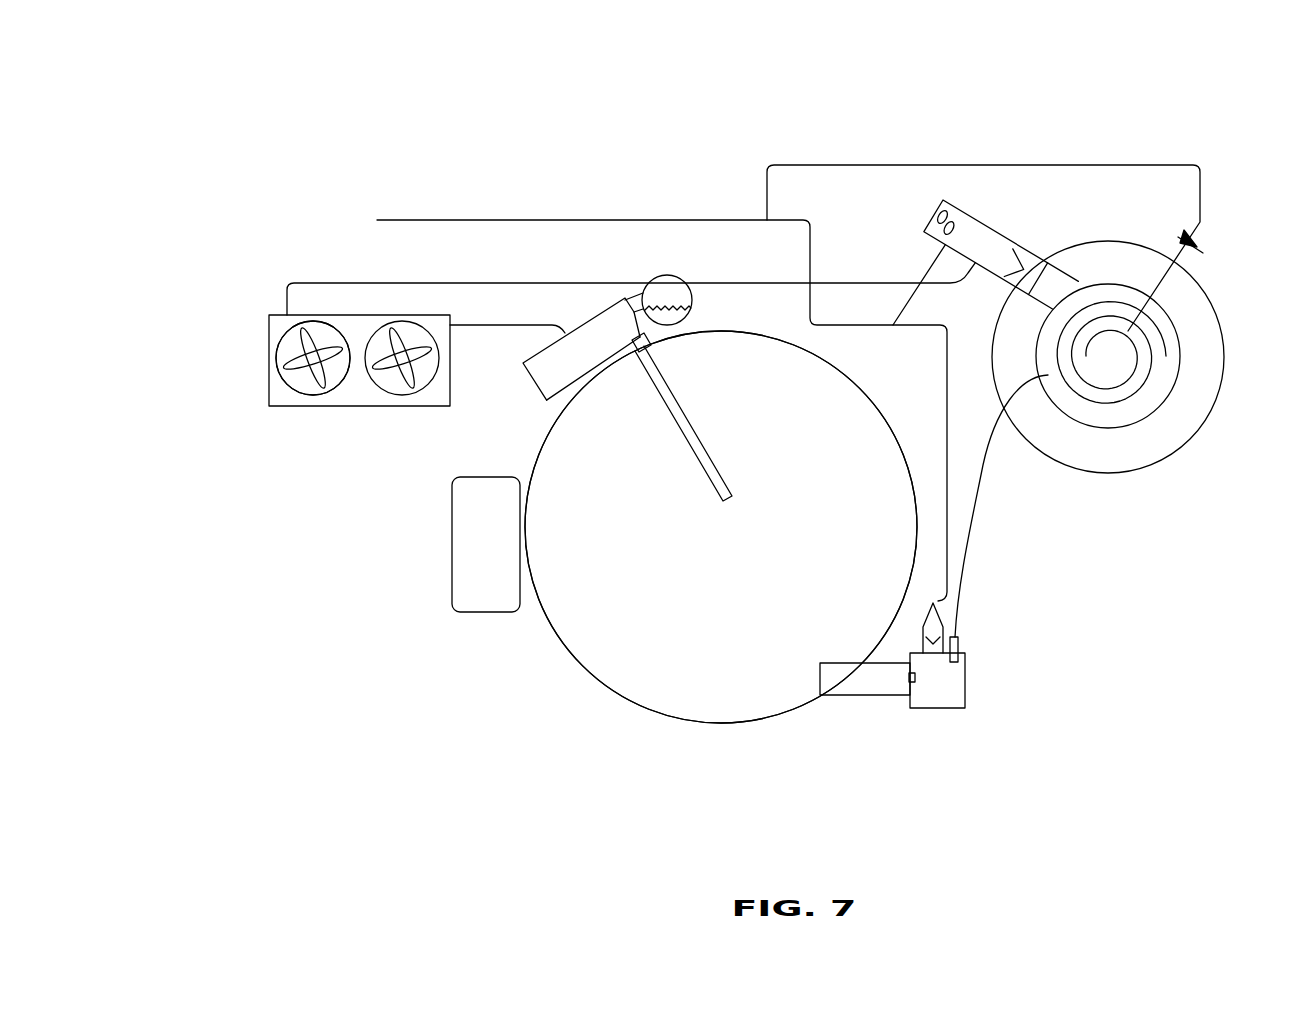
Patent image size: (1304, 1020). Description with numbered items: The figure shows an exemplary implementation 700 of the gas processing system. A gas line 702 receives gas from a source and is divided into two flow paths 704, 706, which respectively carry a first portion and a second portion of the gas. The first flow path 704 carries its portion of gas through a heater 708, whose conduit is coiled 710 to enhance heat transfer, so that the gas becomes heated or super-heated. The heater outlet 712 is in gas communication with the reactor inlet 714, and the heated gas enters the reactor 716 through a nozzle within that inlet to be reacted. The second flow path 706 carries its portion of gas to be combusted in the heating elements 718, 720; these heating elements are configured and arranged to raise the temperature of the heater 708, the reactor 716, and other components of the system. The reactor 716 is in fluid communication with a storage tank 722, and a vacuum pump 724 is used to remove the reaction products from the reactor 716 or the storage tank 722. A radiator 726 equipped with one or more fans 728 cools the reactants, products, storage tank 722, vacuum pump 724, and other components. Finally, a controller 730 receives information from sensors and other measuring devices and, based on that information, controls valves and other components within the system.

The implementation 700 is at (535, 85).
The gas line 702 is at (357, 222).
The flow path 704 is at (848, 165).
The flow path 706 is at (812, 247).
The heater 708 is at (1105, 347).
The coiled conduit 710 is at (1115, 410).
The heater outlet 712 is at (982, 502).
The reactor inlet 714 is at (960, 640).
The reactor 716 is at (942, 667).
The heating element 718 is at (1032, 250).
The heating element 720 is at (922, 613).
The storage tank 722 is at (582, 667).
The vacuum pump 724 is at (721, 527).
The radiator 726 is at (269, 322).
The fan 728 is at (303, 388).
The controller 730 is at (480, 537).